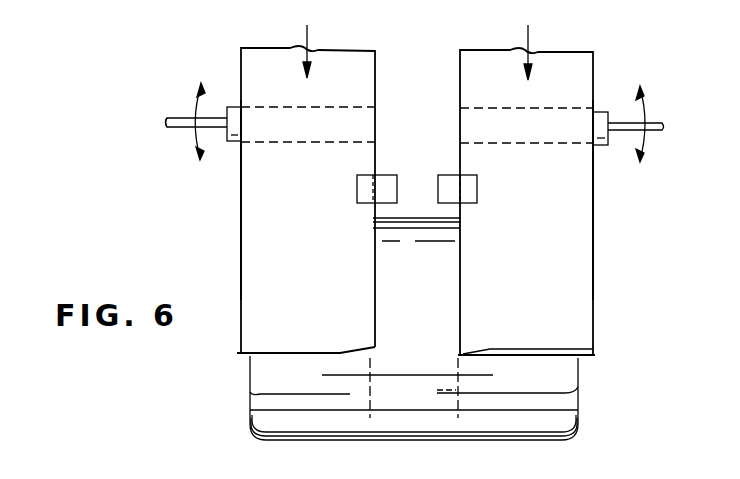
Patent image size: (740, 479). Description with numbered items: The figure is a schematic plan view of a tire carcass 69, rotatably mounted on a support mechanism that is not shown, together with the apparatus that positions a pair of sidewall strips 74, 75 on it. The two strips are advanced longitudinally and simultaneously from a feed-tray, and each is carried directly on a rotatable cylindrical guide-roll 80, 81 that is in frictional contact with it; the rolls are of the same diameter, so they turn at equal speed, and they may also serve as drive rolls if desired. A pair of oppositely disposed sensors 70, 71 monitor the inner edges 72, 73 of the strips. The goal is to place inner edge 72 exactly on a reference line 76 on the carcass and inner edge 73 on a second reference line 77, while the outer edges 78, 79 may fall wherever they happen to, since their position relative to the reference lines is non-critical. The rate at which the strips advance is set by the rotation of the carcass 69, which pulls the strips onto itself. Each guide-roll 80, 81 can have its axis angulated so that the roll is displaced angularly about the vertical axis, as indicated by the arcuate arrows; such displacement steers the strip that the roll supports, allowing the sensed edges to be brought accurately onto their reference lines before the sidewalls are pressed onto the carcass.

The tire carcass 69 is at (432, 420).
The sensor 70 is at (354, 188).
The sensor 71 is at (482, 190).
The inner edge 72 is at (375, 250).
The inner edge 73 is at (460, 275).
The sidewall strip 74 is at (312, 284).
The sidewall strip 75 is at (540, 277).
The reference line 76 is at (372, 378).
The reference line 77 is at (436, 389).
The outer edge 78 is at (240, 236).
The outer edge 79 is at (595, 232).
The guide-roll 80 is at (232, 143).
The guide-roll 81 is at (603, 146).